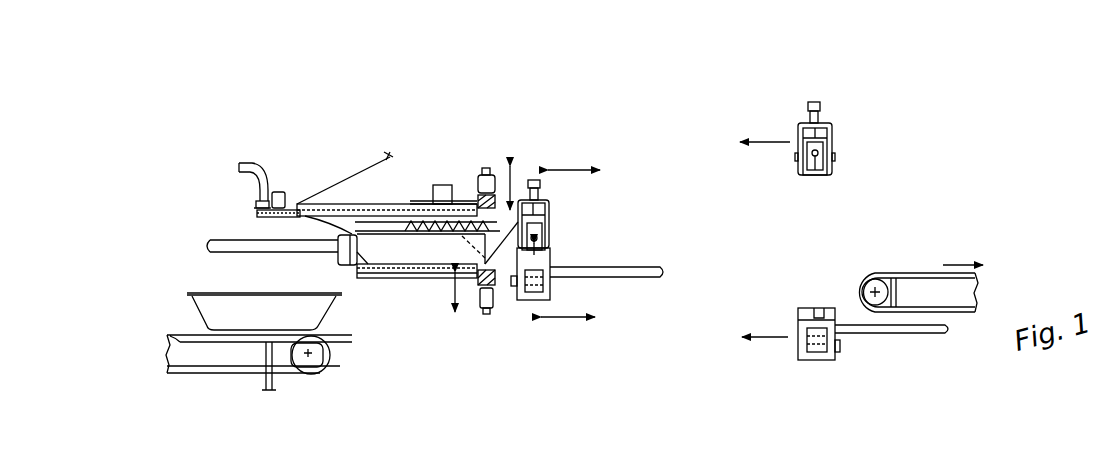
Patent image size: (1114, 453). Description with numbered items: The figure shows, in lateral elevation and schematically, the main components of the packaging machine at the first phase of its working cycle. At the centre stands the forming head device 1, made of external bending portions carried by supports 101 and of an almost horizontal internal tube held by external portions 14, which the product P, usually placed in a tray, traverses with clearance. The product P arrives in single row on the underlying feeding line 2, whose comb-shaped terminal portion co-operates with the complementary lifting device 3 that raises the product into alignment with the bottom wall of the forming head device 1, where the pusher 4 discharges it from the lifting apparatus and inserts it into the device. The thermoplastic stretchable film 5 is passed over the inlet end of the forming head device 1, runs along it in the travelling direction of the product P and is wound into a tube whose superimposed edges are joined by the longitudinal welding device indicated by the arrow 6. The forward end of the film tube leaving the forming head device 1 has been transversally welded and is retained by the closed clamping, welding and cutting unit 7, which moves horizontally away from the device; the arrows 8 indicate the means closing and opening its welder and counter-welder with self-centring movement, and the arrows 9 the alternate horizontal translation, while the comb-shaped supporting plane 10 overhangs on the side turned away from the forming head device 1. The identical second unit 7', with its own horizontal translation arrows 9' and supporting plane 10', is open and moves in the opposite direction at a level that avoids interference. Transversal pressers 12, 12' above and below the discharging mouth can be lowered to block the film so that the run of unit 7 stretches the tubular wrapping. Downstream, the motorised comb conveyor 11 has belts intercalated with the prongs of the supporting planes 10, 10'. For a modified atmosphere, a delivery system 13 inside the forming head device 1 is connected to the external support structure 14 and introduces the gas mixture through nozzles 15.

The forming head device 1 is at (383, 201).
The feeding line 2 is at (186, 379).
The lifting device 3 is at (353, 345).
The pusher 4 is at (338, 250).
The thermoplastic stretchable film 5 is at (345, 178).
The longitudinal welding device 6 is at (453, 297).
The clamping, welding and cutting unit 7 is at (553, 240).
The second clamping, welding and cutting unit 7' is at (850, 231).
The closing and opening means 8 is at (510, 180).
The horizontal translation means 9 is at (570, 247).
The horizontal translation means of second unit 9' is at (765, 241).
The comb-shaped supporting plane 10 is at (606, 250).
The comb-shaped supporting plane of second unit 10' is at (891, 357).
The motorised comb conveyor 11 is at (926, 282).
The transversal presser 12 is at (471, 167).
The transversal presser 12' is at (488, 317).
The delivery system 13 is at (400, 209).
The external support structure 14 is at (283, 193).
The nozzles 15 is at (427, 248).
The supports 101 is at (443, 185).
The product P is at (189, 316).